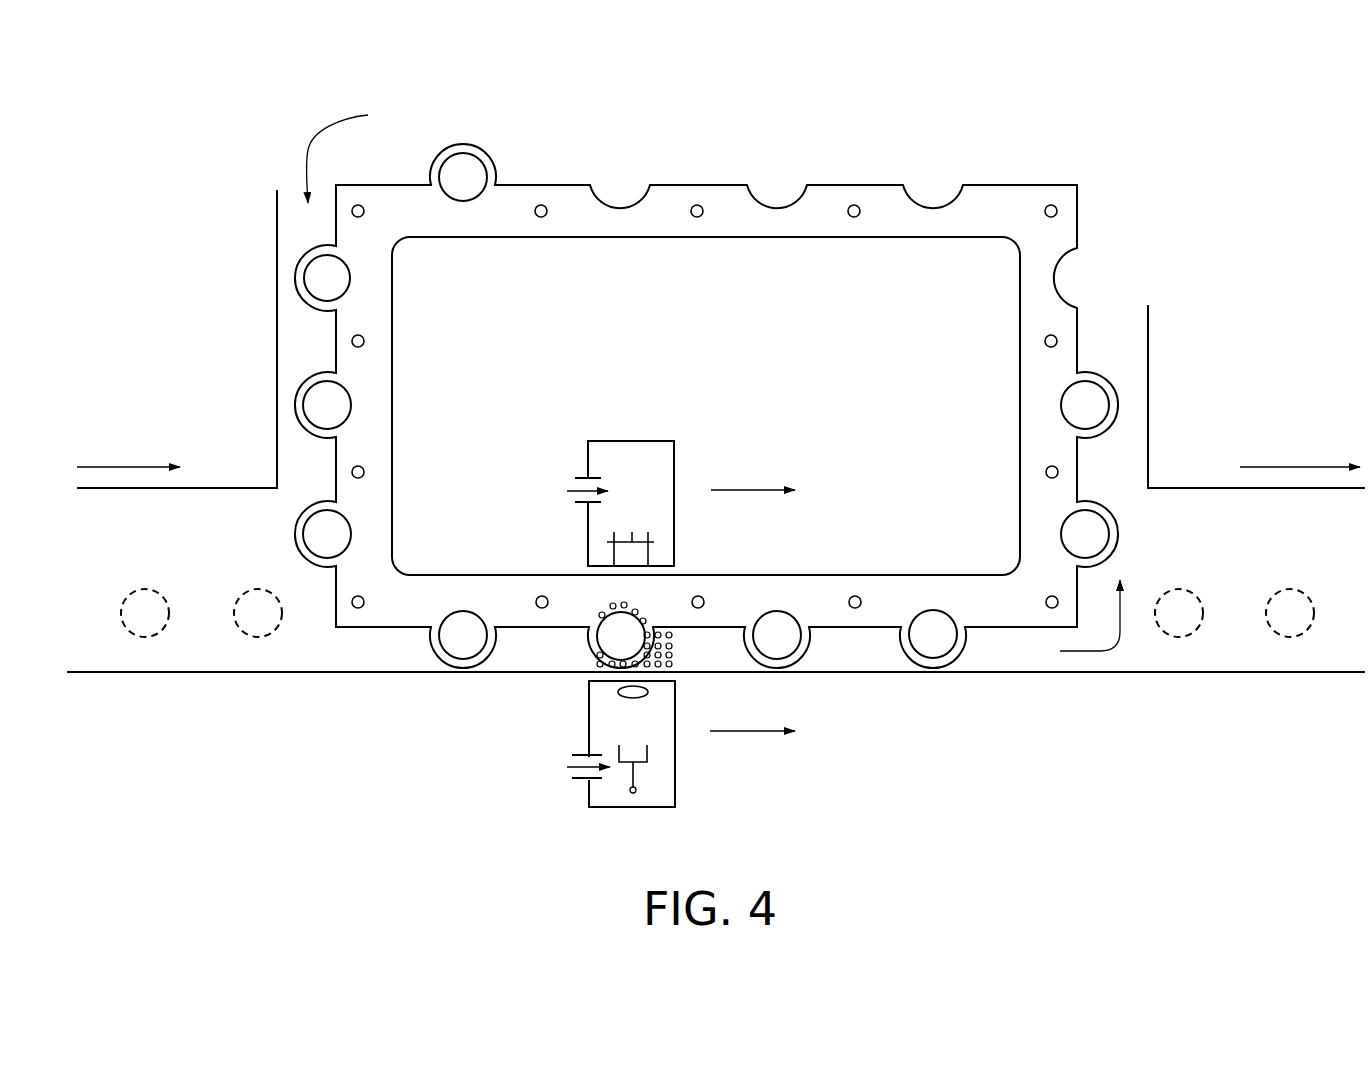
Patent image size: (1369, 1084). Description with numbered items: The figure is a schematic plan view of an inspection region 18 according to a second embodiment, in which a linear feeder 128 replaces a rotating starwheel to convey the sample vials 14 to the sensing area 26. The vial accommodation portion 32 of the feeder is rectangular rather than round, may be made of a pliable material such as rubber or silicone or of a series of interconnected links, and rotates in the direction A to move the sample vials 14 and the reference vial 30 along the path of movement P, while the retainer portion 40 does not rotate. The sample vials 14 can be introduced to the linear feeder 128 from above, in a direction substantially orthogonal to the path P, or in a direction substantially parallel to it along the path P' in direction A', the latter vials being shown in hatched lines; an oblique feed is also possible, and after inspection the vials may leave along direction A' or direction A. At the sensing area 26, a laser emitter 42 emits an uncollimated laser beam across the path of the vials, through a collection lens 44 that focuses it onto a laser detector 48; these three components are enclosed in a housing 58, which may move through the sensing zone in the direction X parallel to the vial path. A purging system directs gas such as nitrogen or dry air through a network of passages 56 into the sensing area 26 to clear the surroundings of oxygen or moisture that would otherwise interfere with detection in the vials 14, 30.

The sample vial 14 is at (312, 278).
The inspection region 18 is at (1120, 316).
The sensing zone 26 is at (584, 639).
The reference vial 30 is at (1058, 209).
The vial accommodation portion 32 is at (340, 441).
The retainer portion 40 is at (877, 675).
The laser emitter 42 is at (640, 553).
The collection lens 44 is at (618, 692).
The laser detector 48 is at (640, 777).
The passages 56 is at (578, 481).
The housing 58 is at (628, 441).
The linear feeder 128 is at (1027, 193).